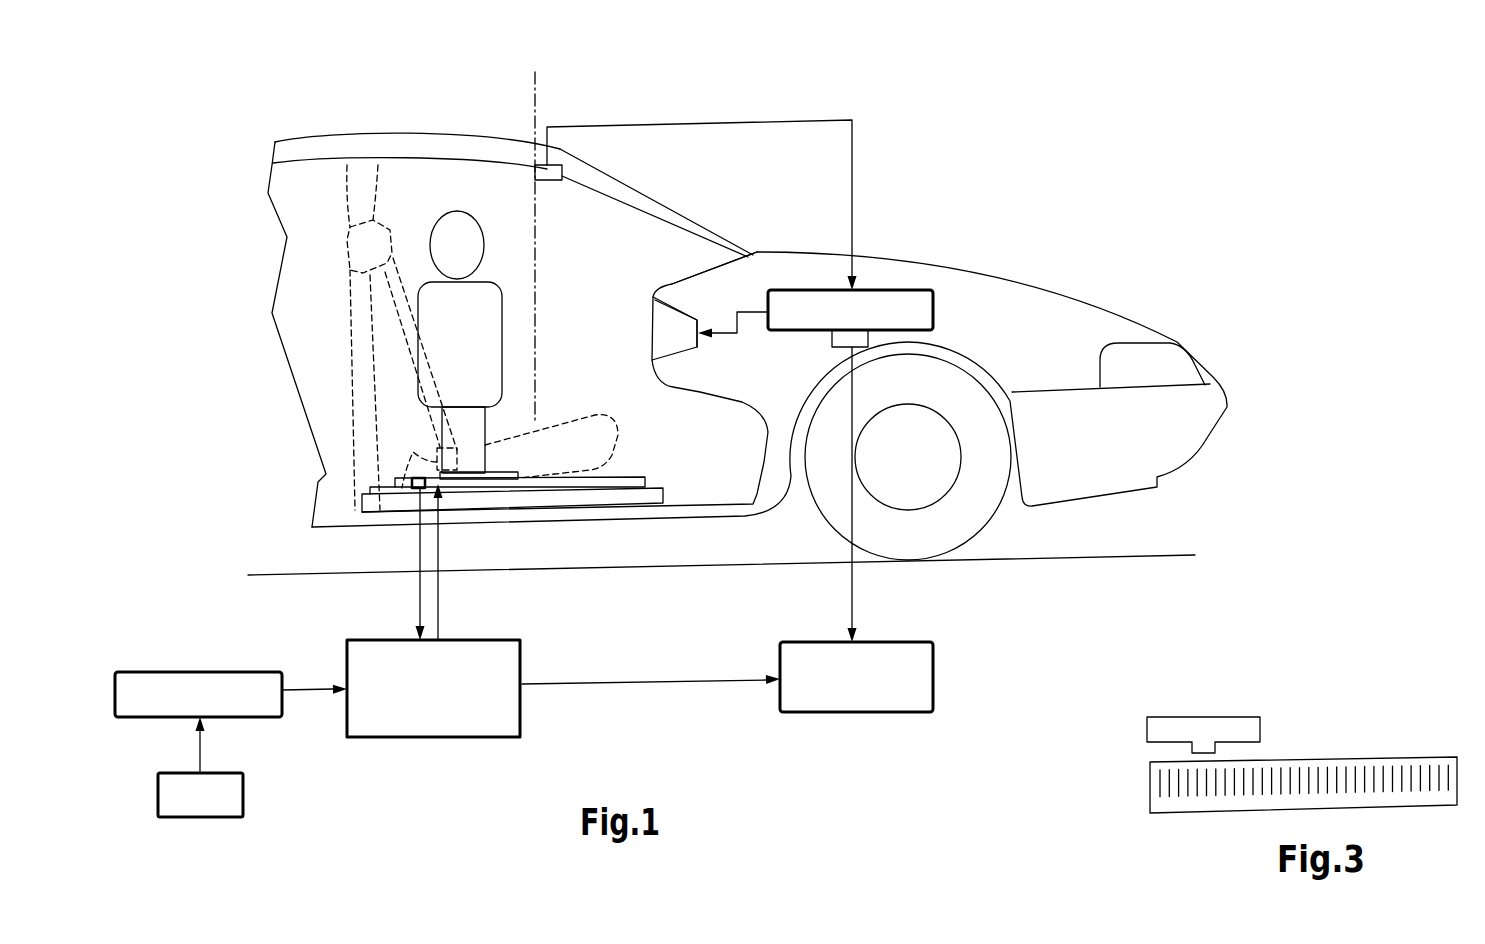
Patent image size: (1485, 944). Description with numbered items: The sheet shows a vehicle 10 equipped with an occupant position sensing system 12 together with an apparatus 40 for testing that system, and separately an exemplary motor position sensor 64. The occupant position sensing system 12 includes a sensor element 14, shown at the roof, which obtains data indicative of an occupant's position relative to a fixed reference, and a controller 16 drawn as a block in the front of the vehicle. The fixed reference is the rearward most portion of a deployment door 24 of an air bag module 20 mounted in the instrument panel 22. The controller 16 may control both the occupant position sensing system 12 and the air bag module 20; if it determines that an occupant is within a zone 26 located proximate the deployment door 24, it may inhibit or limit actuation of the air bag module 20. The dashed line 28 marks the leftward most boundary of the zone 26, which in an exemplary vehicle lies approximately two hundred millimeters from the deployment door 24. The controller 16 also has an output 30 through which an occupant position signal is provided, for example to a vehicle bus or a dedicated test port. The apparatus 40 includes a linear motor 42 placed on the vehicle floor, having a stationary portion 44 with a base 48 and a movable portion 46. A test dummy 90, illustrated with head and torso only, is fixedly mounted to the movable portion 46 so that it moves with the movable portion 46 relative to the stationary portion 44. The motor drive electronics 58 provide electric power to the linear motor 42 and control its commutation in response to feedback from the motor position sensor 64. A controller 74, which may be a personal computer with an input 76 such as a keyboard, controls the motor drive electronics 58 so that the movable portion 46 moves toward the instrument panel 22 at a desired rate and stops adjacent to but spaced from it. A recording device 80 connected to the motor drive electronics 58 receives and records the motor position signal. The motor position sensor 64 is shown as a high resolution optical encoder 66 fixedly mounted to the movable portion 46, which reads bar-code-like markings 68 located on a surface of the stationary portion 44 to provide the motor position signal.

In FIG. 1, the vehicle 10 is at (1020, 280).
In FIG. 1, the occupant position sensing system 12 is at (702, 90).
In FIG. 1, the sensor element 14 is at (565, 167).
In FIG. 1, the controller 16 is at (930, 288).
In FIG. 1, the air bag module 20 is at (678, 327).
In FIG. 1, the instrument panel 22 is at (695, 265).
In FIG. 1, the deployment door 24 is at (650, 326).
In FIG. 1, the zone 26 is at (605, 250).
In FIG. 1, the dashed line 28 is at (530, 105).
In FIG. 1, the output 30 is at (837, 338).
In FIG. 1, the apparatus 40 is at (380, 830).
In FIG. 1, the linear motor 42 is at (660, 522).
In FIG. 1, the stationary portion 44 is at (640, 480).
In FIG. 1, the movable portion 46 is at (512, 472).
In FIG. 1, the base 48 is at (663, 495).
In FIG. 1, the motor drive electronics 58 is at (505, 657).
In FIG. 1, the motor position sensor 64 is at (410, 480).
In FIG. 3, the motor position sensor 64 is at (1335, 705).
In FIG. 3, the optical encoder 66 is at (1235, 728).
In FIG. 3, the markings 68 is at (1383, 785).
In FIG. 1, the controller 74 is at (263, 677).
In FIG. 1, the input 76 is at (237, 775).
In FIG. 1, the recording device 80 is at (930, 685).
In FIG. 1, the test dummy 90 is at (446, 218).